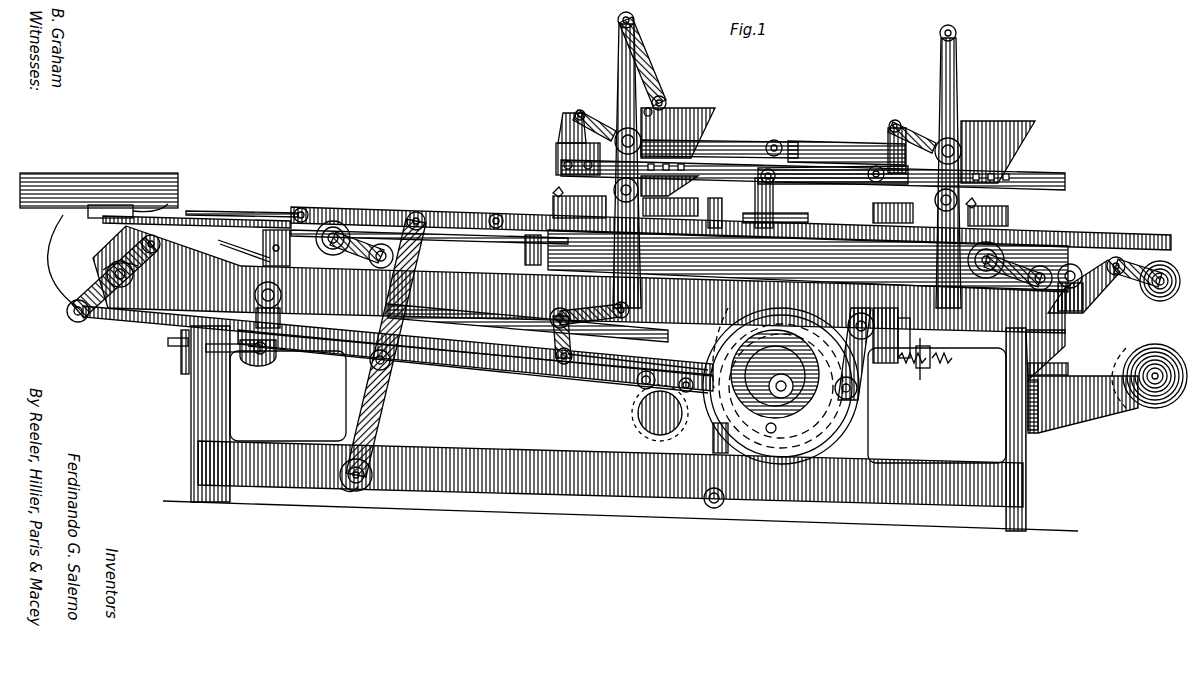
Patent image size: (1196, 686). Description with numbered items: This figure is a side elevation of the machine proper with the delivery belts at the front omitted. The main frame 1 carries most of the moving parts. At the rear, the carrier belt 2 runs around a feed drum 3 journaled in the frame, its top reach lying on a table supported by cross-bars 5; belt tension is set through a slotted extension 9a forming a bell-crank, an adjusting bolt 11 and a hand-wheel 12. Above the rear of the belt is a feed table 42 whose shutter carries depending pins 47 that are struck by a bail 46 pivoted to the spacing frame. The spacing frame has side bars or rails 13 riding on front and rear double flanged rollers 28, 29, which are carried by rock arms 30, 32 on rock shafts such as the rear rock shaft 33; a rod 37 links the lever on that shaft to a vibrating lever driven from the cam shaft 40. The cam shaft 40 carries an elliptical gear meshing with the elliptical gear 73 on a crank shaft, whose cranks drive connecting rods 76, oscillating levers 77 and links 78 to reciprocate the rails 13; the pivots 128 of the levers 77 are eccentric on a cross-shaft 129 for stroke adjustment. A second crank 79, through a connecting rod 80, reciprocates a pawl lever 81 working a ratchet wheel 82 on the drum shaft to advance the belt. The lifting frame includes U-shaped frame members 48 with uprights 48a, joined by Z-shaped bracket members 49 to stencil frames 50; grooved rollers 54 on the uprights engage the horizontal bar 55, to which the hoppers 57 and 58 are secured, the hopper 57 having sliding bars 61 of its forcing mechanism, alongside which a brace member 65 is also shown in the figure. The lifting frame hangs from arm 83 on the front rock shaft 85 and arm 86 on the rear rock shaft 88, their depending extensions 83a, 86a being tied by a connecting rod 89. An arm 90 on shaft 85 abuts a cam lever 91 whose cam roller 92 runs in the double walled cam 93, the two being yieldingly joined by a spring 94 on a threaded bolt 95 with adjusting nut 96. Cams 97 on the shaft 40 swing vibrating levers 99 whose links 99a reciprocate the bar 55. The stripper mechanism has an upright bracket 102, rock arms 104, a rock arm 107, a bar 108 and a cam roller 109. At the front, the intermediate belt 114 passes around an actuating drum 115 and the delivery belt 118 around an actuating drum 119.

The main frame 1 is at (238, 445).
The carrier belt 2 is at (262, 213).
The feed drum 3 is at (42, 268).
The cross-bars 5 is at (282, 246).
The slotted extension 9a is at (255, 355).
The adjusting bolt 11 is at (237, 346).
The hand-wheel 12 is at (176, 366).
The side bars or rails 13 is at (345, 203).
The front pair of double flanged rollers 28 is at (1005, 244).
The rear pair of double flanged rollers 29 is at (325, 213).
The rock arms 30 is at (1040, 258).
The rock arms 32 is at (352, 232).
The rear rock shaft 33 is at (388, 248).
The rod 37 is at (448, 366).
The cam shaft 40 is at (785, 460).
The feed table 42 is at (115, 172).
The bail 46 is at (200, 203).
The depending pins 47 is at (160, 200).
The U-shaped frame members 48 is at (700, 270).
The uprights 48a is at (608, 64).
The Z-shaped web or bracket members 49 is at (545, 186).
The stencil frames 50 is at (545, 196).
The grooved rollers 54 is at (636, 128).
The horizontal bar 55 is at (690, 170).
The hopper 57 is at (700, 108).
The hopper 58 is at (990, 120).
The sliding bars 61 is at (655, 98).
The brace 65 is at (650, 84).
The elliptical gear 73 is at (632, 418).
The connecting rods 76 is at (430, 360).
The oscillating levers 77 is at (372, 420).
The links 78 is at (415, 206).
The second crank 79 is at (630, 392).
The connecting rod 80 is at (345, 336).
The pawl lever 81 is at (62, 296).
The ratchet wheel 82 is at (92, 258).
The arm 83 is at (905, 330).
The depending extension 83a is at (876, 356).
The front rock shaft 85 is at (845, 278).
The arm 86 is at (560, 232).
The depending extension 86a is at (548, 340).
The rear rock shaft 88 is at (520, 330).
The connecting rod 89 is at (570, 362).
The arm 90 is at (922, 348).
The cam lever 91 is at (850, 382).
The cam roller 92 is at (848, 400).
The double walled cam 93 is at (832, 420).
The spring 94 is at (918, 366).
The threaded bolt 95 is at (920, 355).
The adjusting nut 96 is at (928, 356).
The cams 97 is at (760, 428).
The vibrating levers 99 is at (750, 190).
The links 99a is at (830, 176).
The upright bracket 102 is at (548, 142).
The rock arms 104 is at (586, 108).
The rock arm 107 is at (556, 116).
The bar 108 is at (730, 138).
The cam roller 109 is at (766, 132).
The intermediate belt 114 is at (1145, 290).
The actuating drum 115 is at (1105, 310).
The tray or delivery belt 118 is at (1118, 345).
The actuating drum 119 is at (1147, 400).
The pivots 128 is at (332, 482).
The cross-shaft 129 is at (352, 480).